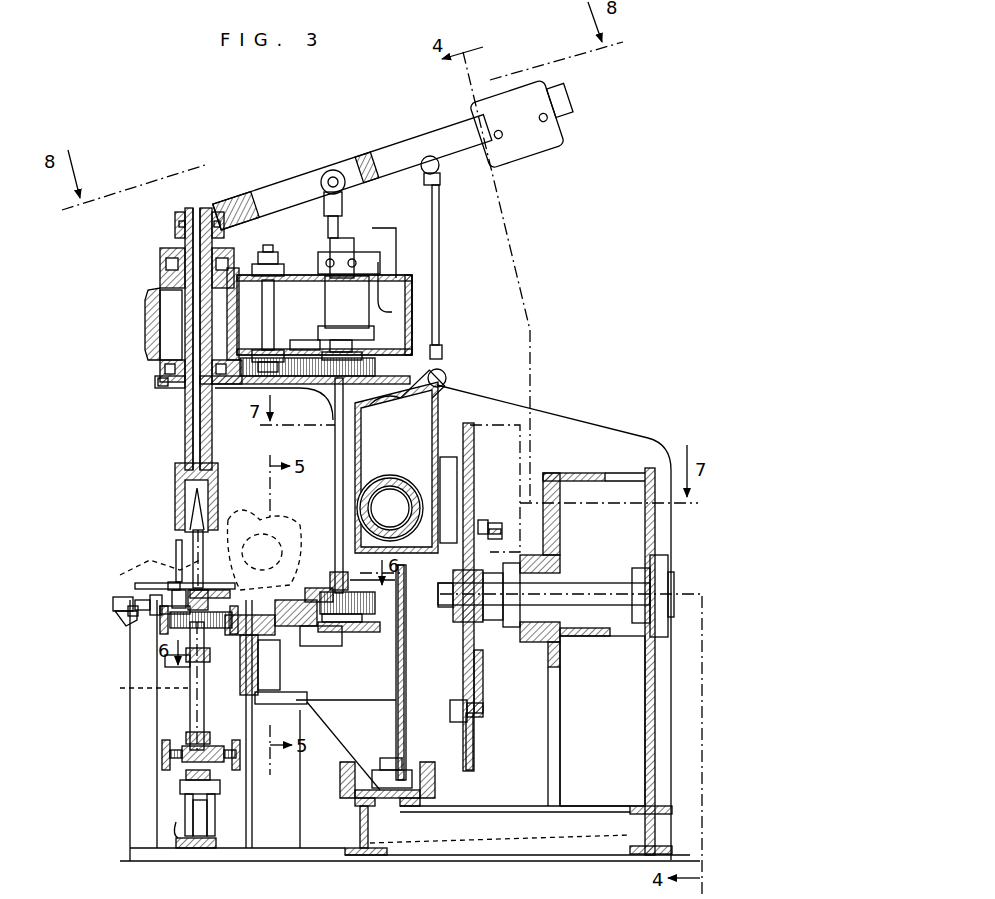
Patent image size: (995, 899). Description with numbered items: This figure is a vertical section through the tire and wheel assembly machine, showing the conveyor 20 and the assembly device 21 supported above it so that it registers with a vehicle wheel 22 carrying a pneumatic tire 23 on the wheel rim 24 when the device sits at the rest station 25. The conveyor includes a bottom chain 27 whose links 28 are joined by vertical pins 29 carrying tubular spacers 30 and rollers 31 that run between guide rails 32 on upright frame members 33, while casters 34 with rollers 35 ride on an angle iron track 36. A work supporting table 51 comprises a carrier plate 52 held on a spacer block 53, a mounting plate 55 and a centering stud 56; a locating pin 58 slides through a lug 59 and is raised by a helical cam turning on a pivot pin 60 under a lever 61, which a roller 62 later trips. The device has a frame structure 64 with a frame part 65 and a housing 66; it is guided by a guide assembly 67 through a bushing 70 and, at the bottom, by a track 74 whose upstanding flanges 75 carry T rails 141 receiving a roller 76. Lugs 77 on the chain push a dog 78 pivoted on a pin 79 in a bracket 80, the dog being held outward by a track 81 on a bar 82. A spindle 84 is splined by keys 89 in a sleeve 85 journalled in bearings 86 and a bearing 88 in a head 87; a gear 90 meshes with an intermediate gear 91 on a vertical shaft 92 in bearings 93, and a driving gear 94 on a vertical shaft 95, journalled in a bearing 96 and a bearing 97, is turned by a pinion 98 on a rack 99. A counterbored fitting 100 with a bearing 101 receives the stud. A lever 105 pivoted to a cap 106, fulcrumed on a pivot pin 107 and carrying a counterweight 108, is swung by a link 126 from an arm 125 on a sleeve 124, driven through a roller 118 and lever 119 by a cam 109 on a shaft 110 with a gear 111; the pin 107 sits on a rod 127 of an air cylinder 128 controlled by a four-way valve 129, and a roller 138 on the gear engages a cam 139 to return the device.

The conveyor 20 is at (190, 700).
The assembly device 21 is at (184, 412).
The vehicle wheel 22 is at (172, 582).
The pneumatic tire 23 is at (286, 522).
The wheel rim 24 is at (140, 560).
The rest station 25 is at (132, 598).
The bottom chain 27 is at (178, 784).
The link 28 is at (255, 795).
The vertical pin 29 is at (138, 689).
The tubular spacer 30 is at (195, 716).
The roller 31 is at (172, 636).
The guide rail 32 is at (160, 625).
The upright frame member 33 is at (128, 838).
The caster 34 is at (216, 814).
The caster roller 35 is at (200, 846).
The track 36 is at (182, 845).
The work supporting table 51 is at (226, 580).
The carrier plate 52 is at (244, 590).
The spacer block 53 is at (248, 578).
The mounting plate 55 is at (148, 590).
The centering stud 56 is at (210, 548).
The locating pin 58 is at (178, 540).
The lug 59 is at (176, 584).
The pivot pin 60 is at (128, 604).
The lever 61 is at (111, 603).
The roller 62 is at (115, 616).
The frame structure 64 is at (396, 695).
The frame part 65 is at (400, 758).
The housing 66 is at (412, 330).
The guide assembly 67 is at (410, 490).
The bushing 70 is at (414, 556).
The track 74 is at (436, 796).
The upstanding flange 75 is at (340, 780).
The roller 76 is at (384, 780).
The lug 77 is at (165, 662).
The dog 78 is at (264, 642).
The pin 79 is at (268, 690).
The bracket 80 is at (300, 704).
The track 81 is at (332, 644).
The bar 82 is at (296, 586).
The spindle 84 is at (184, 440).
The sleeve 85 is at (178, 308).
The bearing 86 is at (162, 262).
The head 87 is at (240, 268).
The bearing 88 is at (158, 364).
The key 89 is at (184, 386).
The gear 90 is at (158, 384).
The intermediate gear 91 is at (298, 350).
The vertical shaft 92 is at (276, 318).
The bearing 93 is at (276, 264).
The driving gear 94 is at (364, 370).
The vertical shaft 95 is at (338, 412).
The bearing 96 is at (354, 348).
The bearing 97 is at (352, 628).
The pinion 98 is at (372, 604).
The rack 99 is at (340, 572).
The counterbored fitting 100 is at (218, 486).
The bearing 101 is at (185, 522).
The lever 105 is at (298, 190).
The cap 106 is at (188, 210).
The pivot pin 107 is at (338, 176).
The counterweight 108 is at (540, 148).
The cam 109 is at (476, 478).
The shaft 110 is at (584, 592).
The gear 111 is at (474, 760).
The roller 118 is at (484, 518).
The lever 119 is at (500, 532).
The sleeve 124 is at (418, 428).
The arm 125 is at (448, 382).
The link 126 is at (440, 350).
The rod 127 is at (348, 240).
The air cylinder 128 is at (346, 308).
The four-way valve 129 is at (386, 238).
The roller 138 is at (452, 700).
The cam 139 is at (462, 468).
The T rail 141 is at (352, 805).